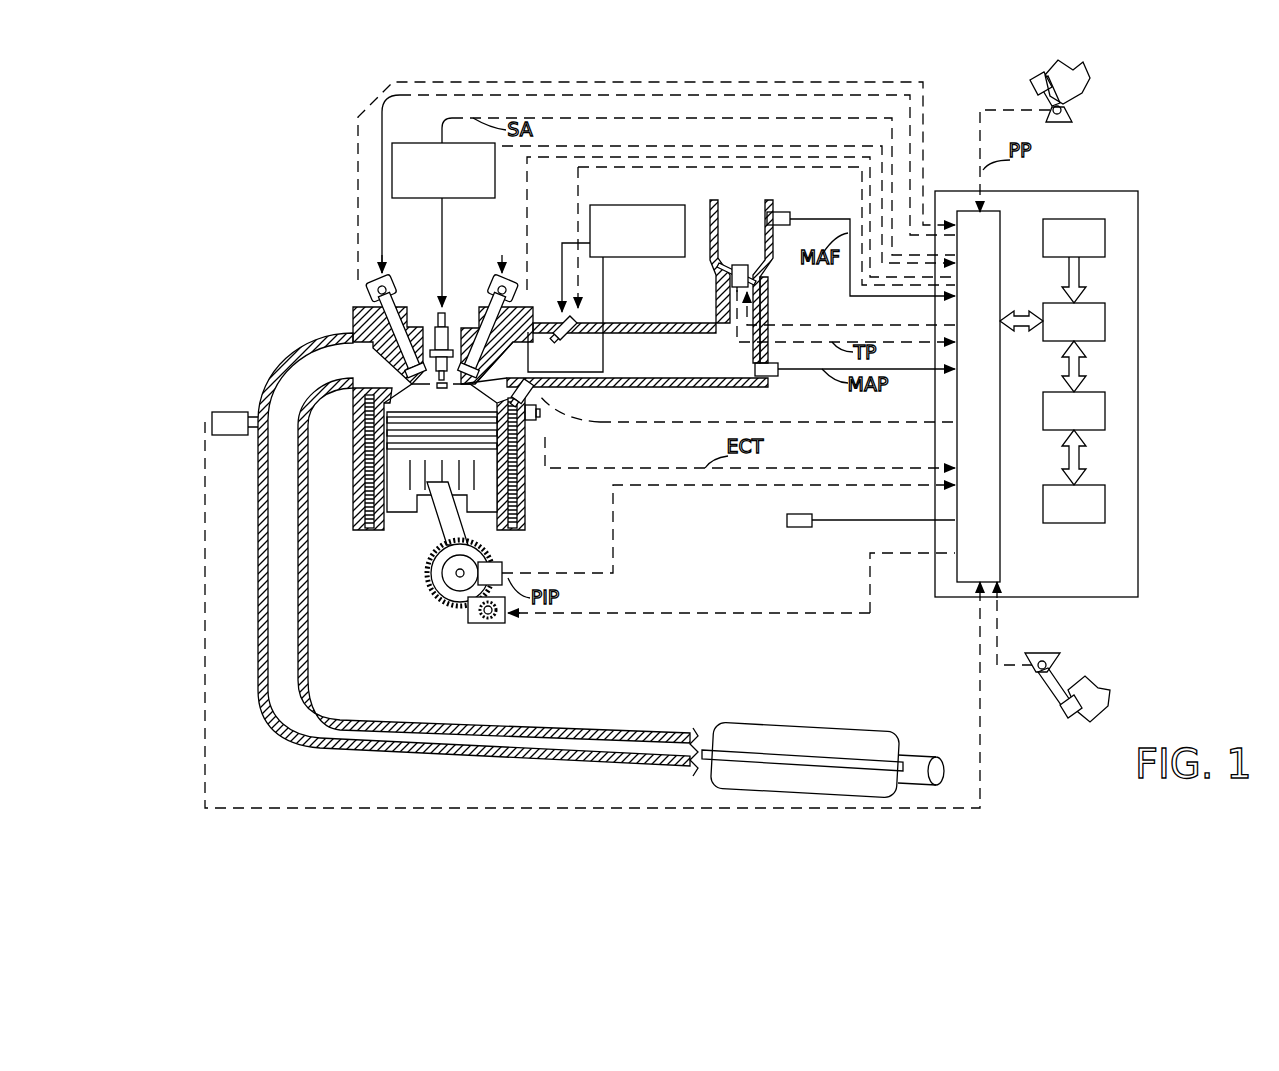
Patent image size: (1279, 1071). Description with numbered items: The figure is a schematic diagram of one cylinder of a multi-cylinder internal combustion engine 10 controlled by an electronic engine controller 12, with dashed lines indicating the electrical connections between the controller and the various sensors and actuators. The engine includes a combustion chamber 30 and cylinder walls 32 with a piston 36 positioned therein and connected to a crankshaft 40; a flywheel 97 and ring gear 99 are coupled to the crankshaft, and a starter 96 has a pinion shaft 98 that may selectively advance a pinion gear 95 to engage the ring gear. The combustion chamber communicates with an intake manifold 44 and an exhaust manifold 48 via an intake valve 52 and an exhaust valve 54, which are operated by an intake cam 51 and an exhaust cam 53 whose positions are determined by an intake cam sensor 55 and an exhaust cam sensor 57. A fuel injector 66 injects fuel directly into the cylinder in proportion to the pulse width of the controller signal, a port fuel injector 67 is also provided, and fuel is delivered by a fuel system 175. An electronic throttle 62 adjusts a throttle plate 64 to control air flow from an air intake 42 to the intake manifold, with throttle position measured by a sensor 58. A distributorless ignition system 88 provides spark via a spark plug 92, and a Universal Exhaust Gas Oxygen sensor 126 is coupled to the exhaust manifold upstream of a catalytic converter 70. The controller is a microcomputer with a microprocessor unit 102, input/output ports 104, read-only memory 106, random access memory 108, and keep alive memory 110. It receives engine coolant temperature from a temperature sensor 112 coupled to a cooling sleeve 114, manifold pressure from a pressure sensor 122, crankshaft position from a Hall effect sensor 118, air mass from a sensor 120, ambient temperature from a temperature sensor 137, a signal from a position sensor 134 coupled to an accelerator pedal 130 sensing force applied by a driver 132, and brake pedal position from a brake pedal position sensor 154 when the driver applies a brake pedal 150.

The internal combustion engine 10 is at (292, 262).
The electronic engine controller 12 is at (1130, 192).
The combustion chamber 30 is at (424, 407).
The cylinder walls 32 is at (388, 525).
The piston 36 is at (416, 497).
The crankshaft 40 is at (466, 562).
The air intake 42 is at (738, 281).
The intake manifold 44 is at (731, 292).
The exhaust manifold 48 is at (545, 565).
The intake cam 51 is at (506, 299).
The intake valve 52 is at (492, 378).
The exhaust cam 53 is at (372, 299).
The exhaust valve 54 is at (358, 333).
The intake cam sensor 55 is at (520, 286).
The exhaust cam sensor 57 is at (365, 300).
The throttle position sensor 58 is at (720, 290).
The electronic throttle 62 is at (760, 274).
The throttle plate 64 is at (718, 272).
The fuel injector 66 is at (542, 412).
The port fuel injector 67 is at (560, 326).
The catalytic converter 70 is at (726, 727).
The distributorless ignition system 88 is at (402, 143).
The spark plug 92 is at (447, 320).
The pinion gear 95 is at (487, 628).
The starter 96 is at (484, 632).
The flywheel 97 is at (432, 583).
The pinion shaft 98 is at (474, 628).
The ring gear 99 is at (455, 612).
The microprocessor unit 102 is at (1107, 325).
The input/output ports 104 is at (1003, 218).
The read-only memory 106 is at (1107, 240).
The random access memory 108 is at (1107, 415).
The keep alive memory 110 is at (1107, 507).
The temperature sensor 112 is at (545, 437).
The cooling sleeve 114 is at (512, 485).
The Hall effect sensor 118 is at (502, 566).
The air mass sensor 120 is at (786, 214).
The pressure sensor 122 is at (780, 377).
The Universal Exhaust Gas Oxygen sensor 126 is at (212, 418).
The accelerator pedal 130 is at (1040, 92).
The driver 132 is at (1083, 80).
The position sensor 134 is at (1068, 113).
The temperature sensor 137 is at (800, 527).
The brake pedal 150 is at (1039, 657).
The brake pedal position sensor 154 is at (1032, 663).
The fuel system 175 is at (638, 205).